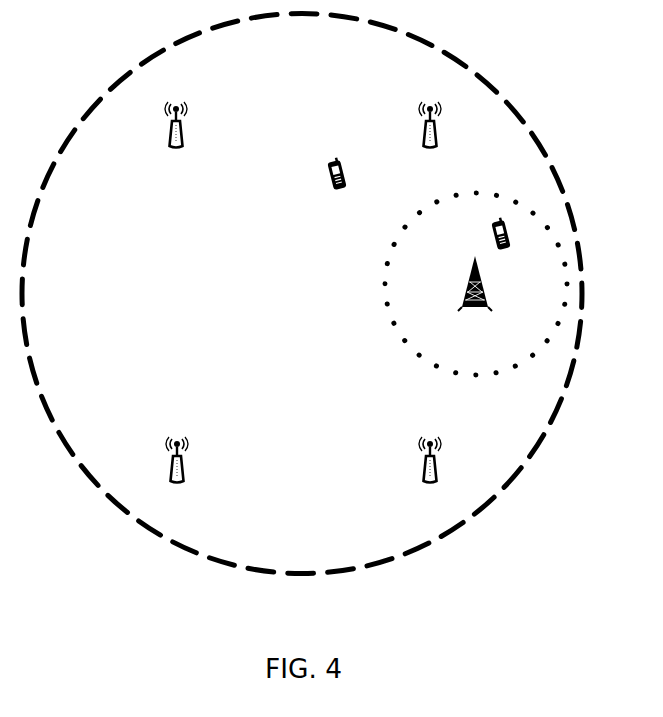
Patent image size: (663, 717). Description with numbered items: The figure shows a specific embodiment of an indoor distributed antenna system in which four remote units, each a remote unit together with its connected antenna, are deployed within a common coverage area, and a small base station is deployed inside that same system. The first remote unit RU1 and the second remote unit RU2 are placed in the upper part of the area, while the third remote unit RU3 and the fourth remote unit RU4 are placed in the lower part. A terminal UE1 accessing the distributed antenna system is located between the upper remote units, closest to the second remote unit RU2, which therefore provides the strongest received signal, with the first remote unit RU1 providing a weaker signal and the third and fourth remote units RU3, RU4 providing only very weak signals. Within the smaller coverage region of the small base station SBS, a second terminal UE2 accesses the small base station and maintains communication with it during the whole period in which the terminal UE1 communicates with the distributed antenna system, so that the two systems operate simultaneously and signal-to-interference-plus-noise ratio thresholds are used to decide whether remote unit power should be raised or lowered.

The first remote unit RU1 is at (175, 141).
The second remote unit RU2 is at (430, 141).
The third remote unit RU3 is at (176, 476).
The fourth remote unit RU4 is at (430, 476).
The terminal accessing the DAS UE1 is at (335, 189).
The terminal accessing the small base station UE2 is at (502, 251).
The small base station SBS is at (475, 296).